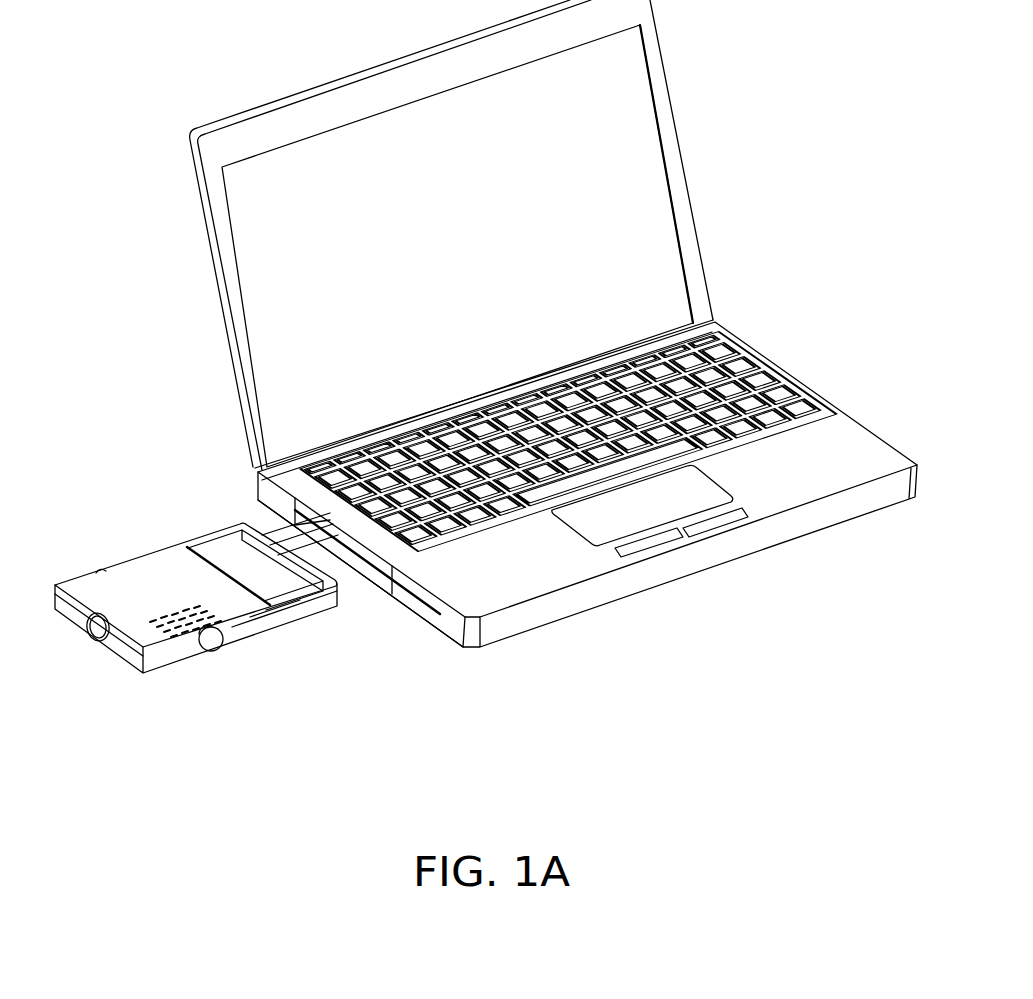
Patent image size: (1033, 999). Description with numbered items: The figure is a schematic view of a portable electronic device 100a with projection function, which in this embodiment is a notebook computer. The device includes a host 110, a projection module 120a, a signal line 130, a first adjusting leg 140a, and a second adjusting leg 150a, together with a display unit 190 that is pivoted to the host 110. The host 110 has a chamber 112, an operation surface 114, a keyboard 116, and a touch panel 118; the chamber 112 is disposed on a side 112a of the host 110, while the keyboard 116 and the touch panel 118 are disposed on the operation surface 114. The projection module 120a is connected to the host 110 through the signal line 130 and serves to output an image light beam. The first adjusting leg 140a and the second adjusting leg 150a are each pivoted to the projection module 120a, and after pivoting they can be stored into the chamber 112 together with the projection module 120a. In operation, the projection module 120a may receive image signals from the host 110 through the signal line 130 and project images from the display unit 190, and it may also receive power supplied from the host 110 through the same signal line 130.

The portable electronic device 100a is at (905, 705).
The host 110 is at (522, 545).
The chamber 112 is at (380, 563).
The side 112a is at (253, 487).
The operation surface 114 is at (453, 588).
The keyboard 116 is at (420, 540).
The touch panel 118 is at (590, 520).
The projection module 120a is at (85, 579).
The signal line 130 is at (268, 532).
The first adjusting leg 140a is at (267, 617).
The second adjusting leg 150a is at (217, 648).
The display unit 190 is at (645, 161).